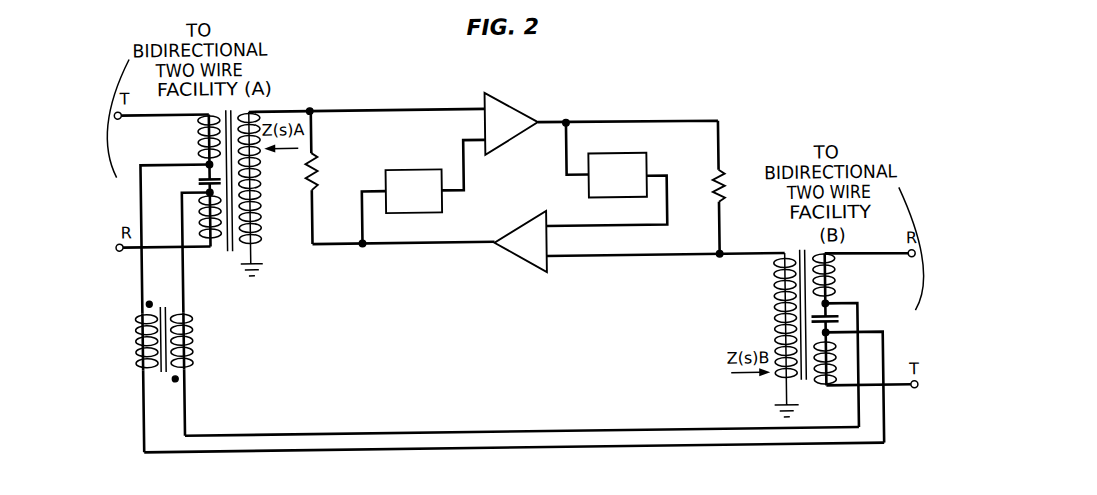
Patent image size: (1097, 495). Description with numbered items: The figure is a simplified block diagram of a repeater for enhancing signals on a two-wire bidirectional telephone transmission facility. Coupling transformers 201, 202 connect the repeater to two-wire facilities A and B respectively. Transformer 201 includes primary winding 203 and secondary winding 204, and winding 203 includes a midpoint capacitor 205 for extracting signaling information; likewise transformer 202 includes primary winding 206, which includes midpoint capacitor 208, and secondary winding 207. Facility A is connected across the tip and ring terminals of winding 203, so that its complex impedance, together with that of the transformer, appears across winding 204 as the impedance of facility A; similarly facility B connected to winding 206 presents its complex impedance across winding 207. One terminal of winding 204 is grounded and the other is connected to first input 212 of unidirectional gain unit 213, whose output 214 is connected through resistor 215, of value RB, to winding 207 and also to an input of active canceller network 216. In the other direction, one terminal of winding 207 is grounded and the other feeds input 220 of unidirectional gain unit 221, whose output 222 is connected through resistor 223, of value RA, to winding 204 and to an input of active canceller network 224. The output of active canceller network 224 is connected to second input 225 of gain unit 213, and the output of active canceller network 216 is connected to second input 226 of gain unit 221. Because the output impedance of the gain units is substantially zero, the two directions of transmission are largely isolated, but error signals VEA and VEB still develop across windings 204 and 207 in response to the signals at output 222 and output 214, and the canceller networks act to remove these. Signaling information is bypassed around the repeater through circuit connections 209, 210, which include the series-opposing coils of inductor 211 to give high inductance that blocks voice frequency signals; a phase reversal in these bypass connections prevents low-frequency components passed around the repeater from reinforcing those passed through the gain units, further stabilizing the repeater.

The coupling transformer 201 is at (289, 102).
The coupling transformer 202 is at (797, 250).
The primary winding 203 is at (200, 111).
The secondary winding 204 is at (261, 198).
The midpoint capacitor 205 is at (200, 176).
The primary winding 206 is at (837, 282).
The secondary winding 207 is at (772, 276).
The midpoint capacitor 208 is at (839, 325).
The circuit connection 209 is at (408, 431).
The circuit connection 210 is at (480, 446).
The inductor 211 is at (170, 300).
The first input 212 is at (403, 106).
The unidirectional gain unit 213 is at (510, 102).
The output 214 is at (553, 120).
The resistor 215 is at (718, 177).
The active canceller network 216 is at (615, 154).
The input 220 is at (603, 257).
The unidirectional gain unit 221 is at (513, 231).
The output 222 is at (437, 243).
The resistor 223 is at (315, 165).
The active canceller network 224 is at (407, 168).
The second input 225 is at (467, 164).
The second input 226 is at (598, 225).